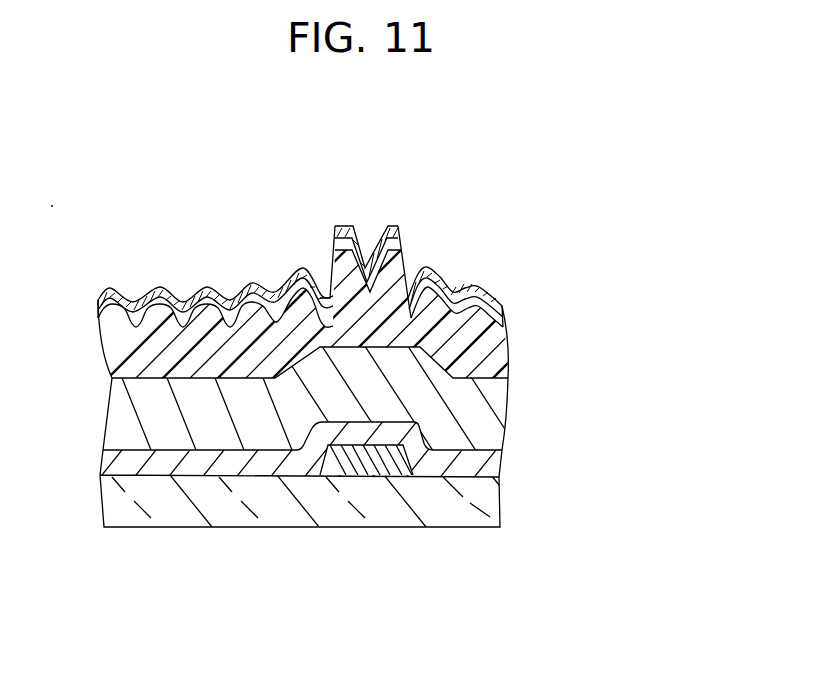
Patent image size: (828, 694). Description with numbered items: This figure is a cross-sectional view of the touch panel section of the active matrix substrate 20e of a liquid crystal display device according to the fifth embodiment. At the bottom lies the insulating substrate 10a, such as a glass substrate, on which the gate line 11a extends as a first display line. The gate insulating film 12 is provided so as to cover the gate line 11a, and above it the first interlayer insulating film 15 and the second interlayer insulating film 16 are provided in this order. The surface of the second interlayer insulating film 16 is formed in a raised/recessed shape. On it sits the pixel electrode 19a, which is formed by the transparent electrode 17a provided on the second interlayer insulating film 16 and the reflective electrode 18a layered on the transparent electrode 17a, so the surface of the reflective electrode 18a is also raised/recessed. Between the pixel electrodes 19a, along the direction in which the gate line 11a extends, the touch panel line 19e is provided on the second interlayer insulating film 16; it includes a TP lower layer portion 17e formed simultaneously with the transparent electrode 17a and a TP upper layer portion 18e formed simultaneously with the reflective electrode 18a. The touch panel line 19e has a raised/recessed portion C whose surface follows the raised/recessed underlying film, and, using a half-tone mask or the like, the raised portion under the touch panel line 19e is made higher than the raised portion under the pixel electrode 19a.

The active matrix substrate 20e is at (184, 212).
The raised/recessed portion C is at (362, 190).
The TP upper layer portion 18e is at (382, 227).
The TP lower layer portion 17e is at (400, 240).
The touch panel line 19e is at (453, 233).
The reflective electrode 18a is at (490, 286).
The transparent electrode 17a is at (505, 318).
The pixel electrode 19a is at (388, 288).
The second interlayer insulating film 16 is at (490, 355).
The first interlayer insulating film 15 is at (497, 423).
The gate insulating film 12 is at (490, 468).
The insulating substrate 10a is at (497, 508).
The gate line 11a is at (358, 468).